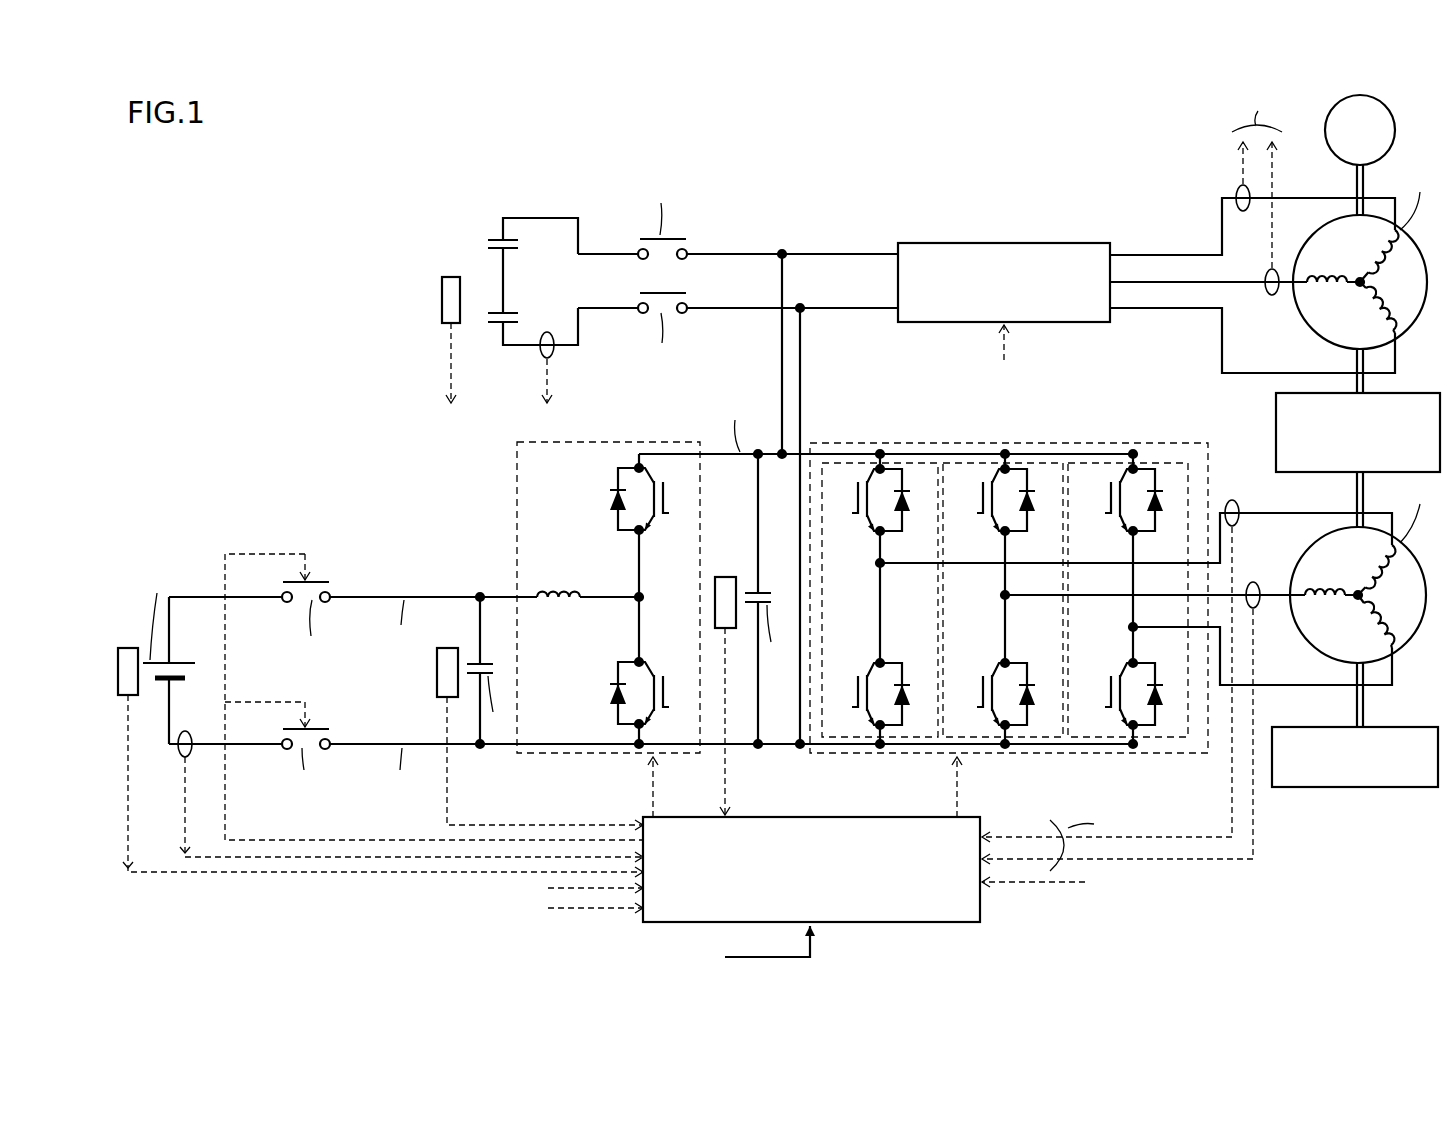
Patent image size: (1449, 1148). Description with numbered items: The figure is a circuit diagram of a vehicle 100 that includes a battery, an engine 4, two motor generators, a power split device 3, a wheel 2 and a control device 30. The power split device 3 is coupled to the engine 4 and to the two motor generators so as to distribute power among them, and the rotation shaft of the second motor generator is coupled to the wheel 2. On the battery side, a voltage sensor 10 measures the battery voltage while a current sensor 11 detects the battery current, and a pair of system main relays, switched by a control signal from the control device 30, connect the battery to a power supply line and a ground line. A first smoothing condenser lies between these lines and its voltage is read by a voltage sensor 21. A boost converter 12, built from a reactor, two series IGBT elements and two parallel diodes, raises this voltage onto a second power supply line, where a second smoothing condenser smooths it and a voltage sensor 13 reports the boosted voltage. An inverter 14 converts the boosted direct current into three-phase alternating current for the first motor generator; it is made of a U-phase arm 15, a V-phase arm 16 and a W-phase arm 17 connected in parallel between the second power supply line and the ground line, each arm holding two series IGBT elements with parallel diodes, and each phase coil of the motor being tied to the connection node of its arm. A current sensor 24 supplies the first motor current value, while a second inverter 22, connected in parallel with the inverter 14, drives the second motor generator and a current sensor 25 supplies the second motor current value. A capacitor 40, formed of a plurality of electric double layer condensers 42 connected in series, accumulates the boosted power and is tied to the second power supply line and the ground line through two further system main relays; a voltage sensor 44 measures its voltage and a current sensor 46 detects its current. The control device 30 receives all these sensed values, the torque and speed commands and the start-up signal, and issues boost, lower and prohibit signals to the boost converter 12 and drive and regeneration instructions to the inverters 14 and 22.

The vehicle 100 is at (182, 357).
The wheel 2 is at (1396, 130).
The power split device 3 is at (1410, 393).
The engine 4 is at (1410, 727).
The voltage sensor 10 is at (128, 647).
The current sensor 11 is at (190, 731).
The boost converter 12 is at (516, 462).
The voltage sensor 13 is at (725, 576).
The inverter 14 is at (847, 441).
The U-phase arm 15 is at (917, 461).
The V-phase arm 16 is at (1040, 461).
The W-phase arm 17 is at (1165, 461).
The voltage sensor 21 is at (446, 647).
The inverter 22 is at (1072, 248).
The current sensor 24 is at (1232, 500).
The current sensor 25 is at (1243, 212).
The control device 30 is at (921, 923).
The capacitor 40 is at (510, 260).
The electric double layer condenser 42 is at (525, 243).
The voltage sensor 44 is at (441, 298).
The current sensor 46 is at (547, 332).